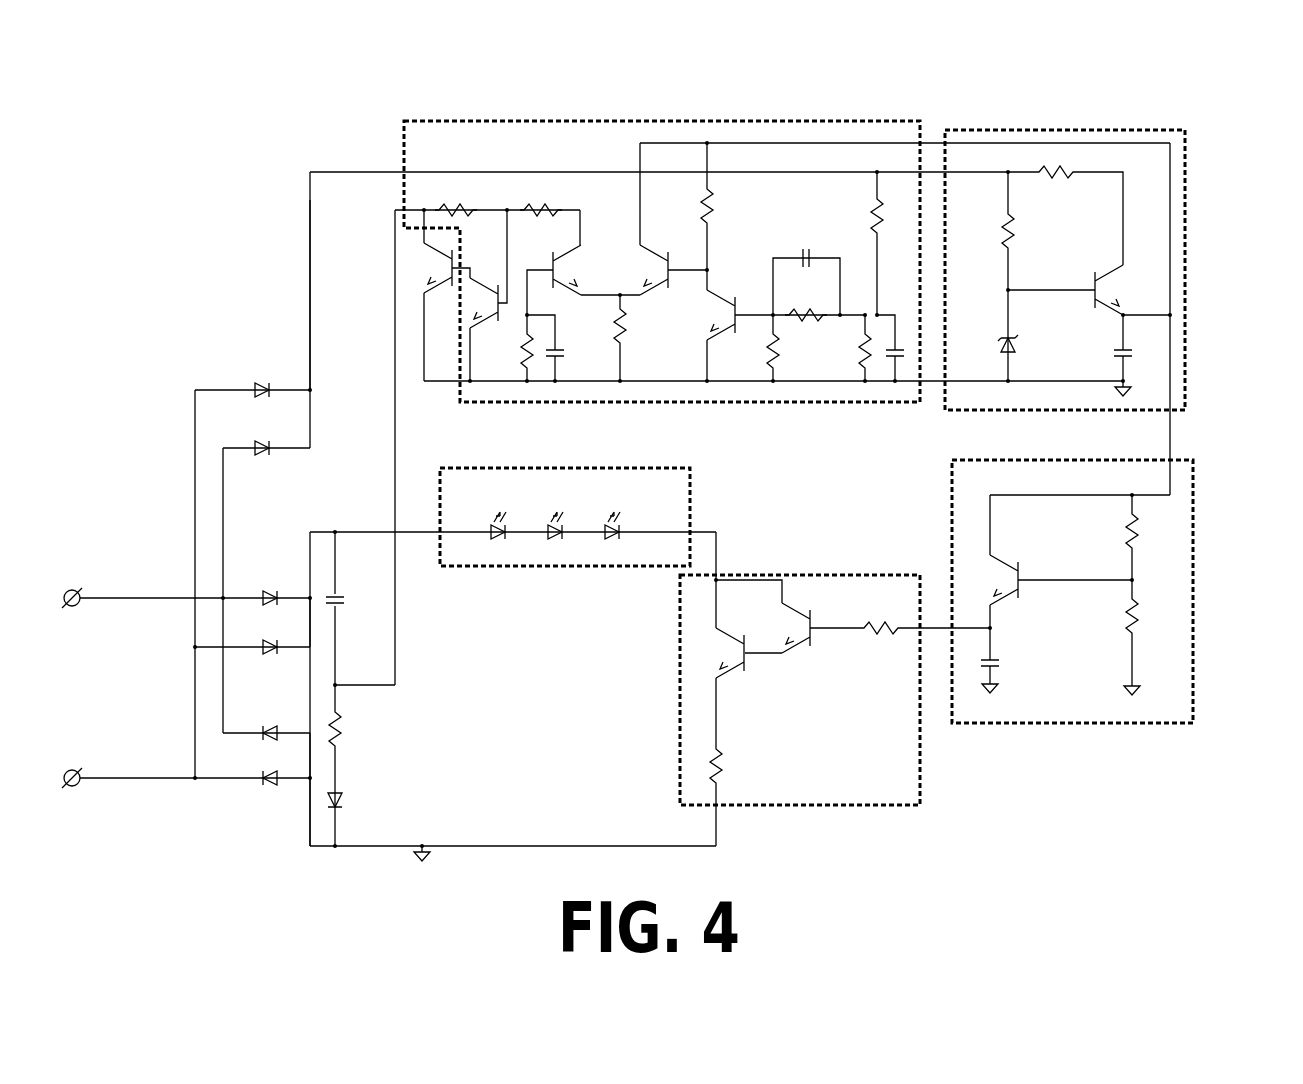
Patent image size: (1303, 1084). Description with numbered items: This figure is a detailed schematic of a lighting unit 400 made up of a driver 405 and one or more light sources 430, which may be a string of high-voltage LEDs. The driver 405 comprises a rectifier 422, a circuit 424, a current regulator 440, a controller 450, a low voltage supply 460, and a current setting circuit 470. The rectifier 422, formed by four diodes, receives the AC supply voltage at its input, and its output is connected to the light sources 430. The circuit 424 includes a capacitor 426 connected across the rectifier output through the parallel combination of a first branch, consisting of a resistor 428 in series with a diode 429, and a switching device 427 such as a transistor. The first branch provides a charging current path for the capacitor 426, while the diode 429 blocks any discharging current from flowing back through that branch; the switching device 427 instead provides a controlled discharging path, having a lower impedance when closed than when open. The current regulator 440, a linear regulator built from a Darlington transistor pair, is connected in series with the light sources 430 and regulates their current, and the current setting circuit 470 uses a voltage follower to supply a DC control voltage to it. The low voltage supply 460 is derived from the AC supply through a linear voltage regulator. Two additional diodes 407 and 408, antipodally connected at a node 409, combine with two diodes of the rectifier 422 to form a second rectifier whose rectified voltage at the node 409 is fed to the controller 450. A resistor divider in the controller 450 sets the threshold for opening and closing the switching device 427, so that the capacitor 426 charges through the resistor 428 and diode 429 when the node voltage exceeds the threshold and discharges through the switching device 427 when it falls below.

The lighting unit 400 is at (1292, 68).
The driver 405 is at (275, 143).
The diode 407 is at (257, 388).
The diode 408 is at (264, 457).
The node 409 is at (310, 388).
The rectifier 422 is at (183, 693).
The circuit 424 is at (362, 526).
The capacitor 426 is at (357, 610).
The switching device 427 is at (413, 263).
The resistor 428 is at (365, 732).
The diode 429 is at (364, 810).
The light source 430 is at (578, 568).
The current regulator 440 is at (822, 575).
The controller 450 is at (749, 226).
The low voltage supply 460 is at (1050, 128).
The current setting circuit 470 is at (1073, 730).